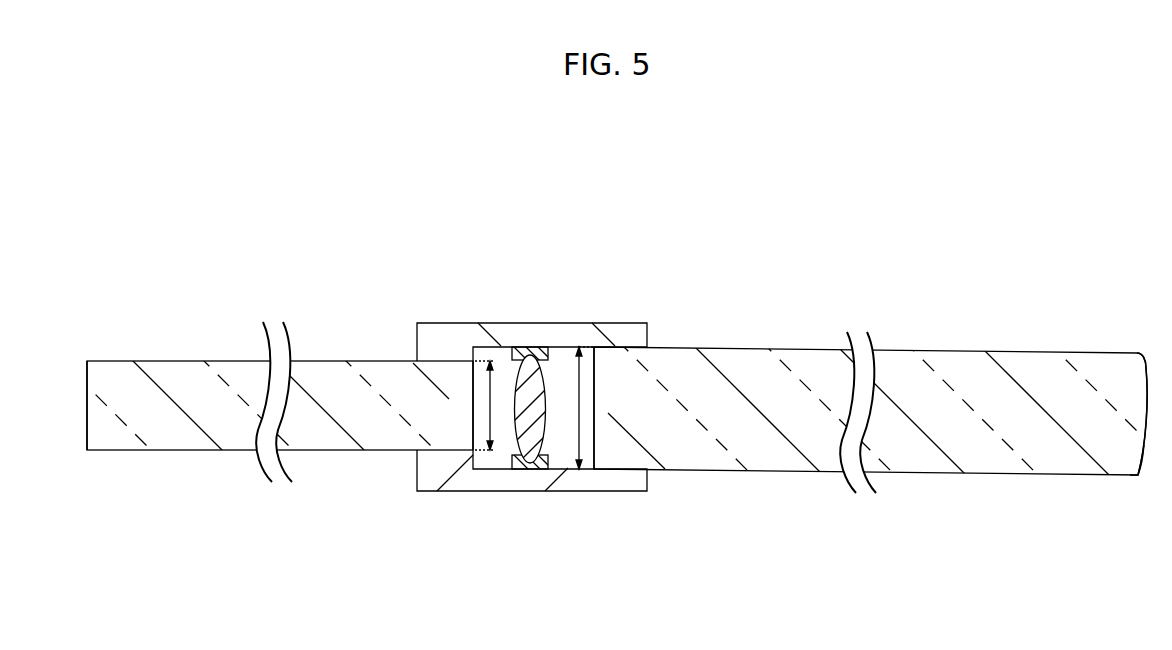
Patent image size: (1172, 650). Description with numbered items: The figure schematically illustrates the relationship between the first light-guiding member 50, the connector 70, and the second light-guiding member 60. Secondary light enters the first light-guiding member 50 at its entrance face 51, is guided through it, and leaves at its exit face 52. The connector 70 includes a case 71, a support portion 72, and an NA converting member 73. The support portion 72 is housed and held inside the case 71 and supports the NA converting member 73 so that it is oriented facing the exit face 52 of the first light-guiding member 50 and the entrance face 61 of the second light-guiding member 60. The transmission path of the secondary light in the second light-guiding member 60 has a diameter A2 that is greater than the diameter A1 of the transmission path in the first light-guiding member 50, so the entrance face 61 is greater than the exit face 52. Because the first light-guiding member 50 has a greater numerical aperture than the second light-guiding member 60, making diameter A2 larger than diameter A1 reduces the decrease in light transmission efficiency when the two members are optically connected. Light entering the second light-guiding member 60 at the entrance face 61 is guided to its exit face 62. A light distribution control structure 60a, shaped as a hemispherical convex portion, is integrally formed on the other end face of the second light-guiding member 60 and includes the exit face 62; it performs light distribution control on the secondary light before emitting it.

The first light-guiding member 50 is at (346, 359).
The entrance face 51 is at (87, 446).
The exit face 52 is at (474, 442).
The second light-guiding member 60 is at (1020, 351).
The light distribution control structure 60a is at (1132, 395).
The entrance face 61 is at (593, 442).
The exit face 62 is at (1145, 442).
The connector 70 is at (609, 322).
The case 71 is at (472, 335).
The support portion 72 is at (542, 470).
The NA converting member 73 is at (524, 357).
The diameter A1 is at (473, 405).
The diameter A2 is at (595, 408).